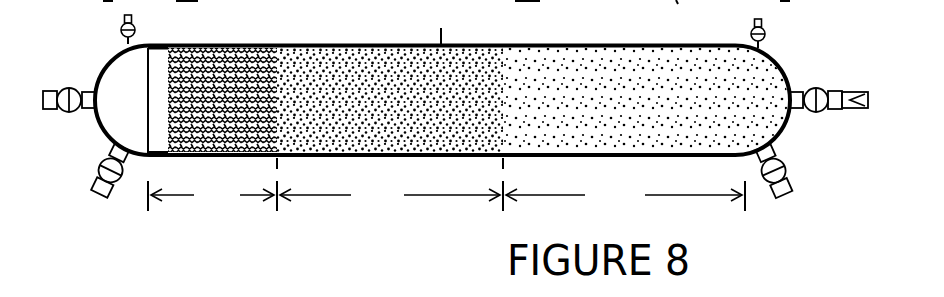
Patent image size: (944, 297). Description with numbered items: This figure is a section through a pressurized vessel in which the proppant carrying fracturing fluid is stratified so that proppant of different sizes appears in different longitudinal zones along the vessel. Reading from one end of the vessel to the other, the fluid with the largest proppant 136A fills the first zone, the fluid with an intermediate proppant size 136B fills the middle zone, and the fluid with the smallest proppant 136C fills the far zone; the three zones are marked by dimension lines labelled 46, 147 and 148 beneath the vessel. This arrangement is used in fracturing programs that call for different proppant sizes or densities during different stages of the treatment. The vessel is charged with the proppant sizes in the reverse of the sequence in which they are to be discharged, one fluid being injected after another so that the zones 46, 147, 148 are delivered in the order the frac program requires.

The proppant carrying fracturing fluid with largest proppant size 136A is at (215, 18).
The proppant carrying fracturing fluid with intermediate proppant size 136B is at (329, 76).
The proppant carrying fracturing fluid with smallest proppant size 136C is at (645, 80).
The length of first zone 46 is at (212, 199).
The longitudinal zone 147 is at (391, 199).
The longitudinal zone 148 is at (625, 199).